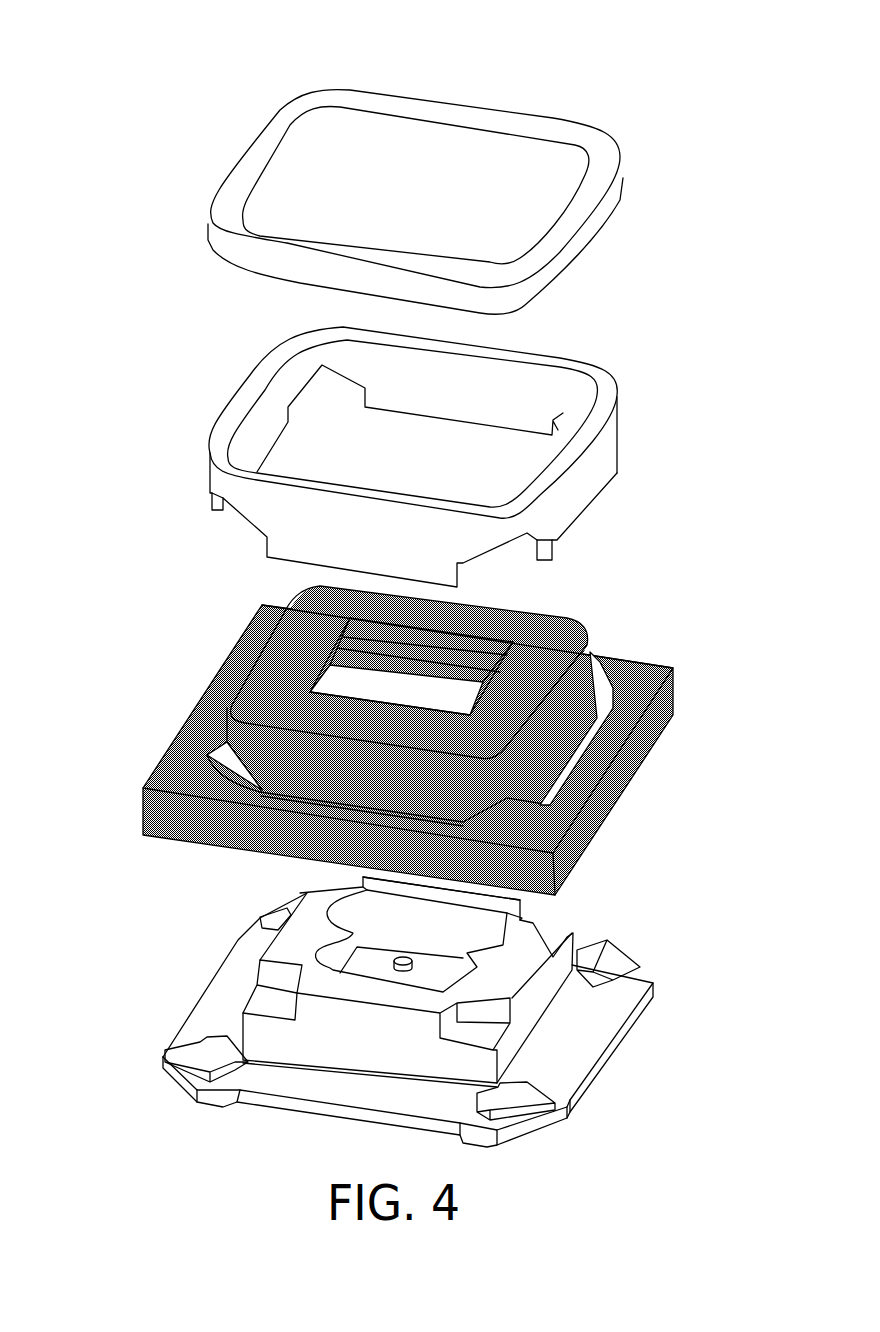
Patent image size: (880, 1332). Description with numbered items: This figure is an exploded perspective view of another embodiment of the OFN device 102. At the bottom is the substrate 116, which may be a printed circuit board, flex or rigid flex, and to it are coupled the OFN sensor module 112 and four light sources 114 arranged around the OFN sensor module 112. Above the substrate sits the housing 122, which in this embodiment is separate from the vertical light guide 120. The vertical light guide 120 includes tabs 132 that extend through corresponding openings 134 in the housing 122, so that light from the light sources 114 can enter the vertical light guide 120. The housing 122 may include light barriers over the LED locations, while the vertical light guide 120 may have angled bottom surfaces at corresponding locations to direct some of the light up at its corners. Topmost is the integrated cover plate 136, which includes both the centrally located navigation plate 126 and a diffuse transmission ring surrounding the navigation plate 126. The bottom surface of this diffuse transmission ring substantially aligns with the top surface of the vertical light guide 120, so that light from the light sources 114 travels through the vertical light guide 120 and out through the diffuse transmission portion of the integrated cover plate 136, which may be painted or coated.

The OFN device 102 is at (257, 42).
The navigation plate 126 is at (482, 132).
The integrated cover plate 136 is at (218, 197).
The vertical light guide 120 is at (608, 388).
The tabs 132 is at (560, 540).
The housing 122 is at (567, 637).
The openings 134 is at (577, 745).
The substrate 116 is at (590, 1077).
The OFN sensor module 112 is at (573, 937).
The light sources 114 is at (263, 913).